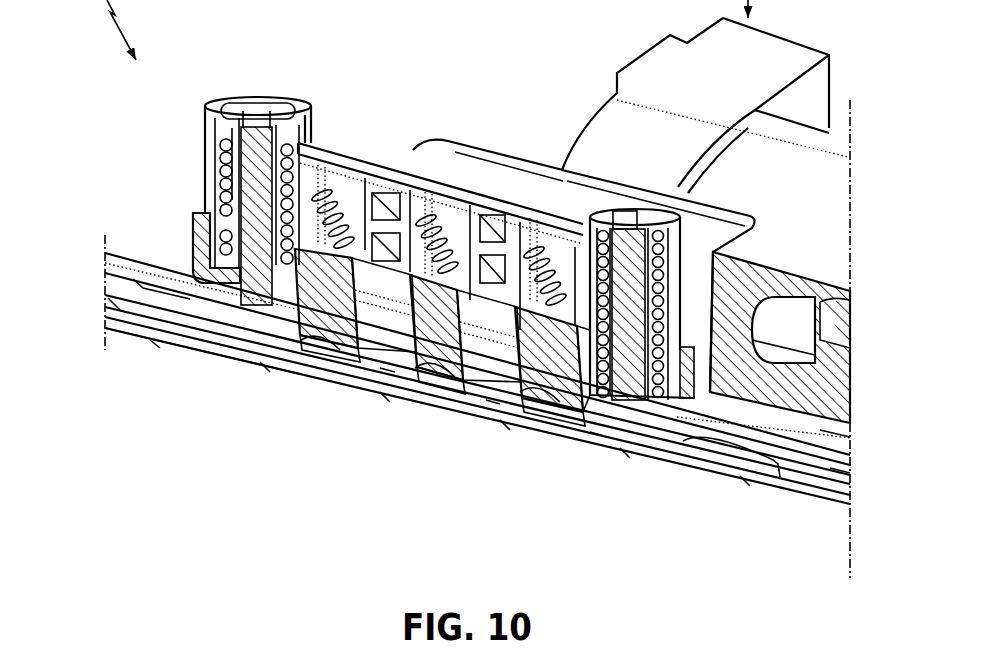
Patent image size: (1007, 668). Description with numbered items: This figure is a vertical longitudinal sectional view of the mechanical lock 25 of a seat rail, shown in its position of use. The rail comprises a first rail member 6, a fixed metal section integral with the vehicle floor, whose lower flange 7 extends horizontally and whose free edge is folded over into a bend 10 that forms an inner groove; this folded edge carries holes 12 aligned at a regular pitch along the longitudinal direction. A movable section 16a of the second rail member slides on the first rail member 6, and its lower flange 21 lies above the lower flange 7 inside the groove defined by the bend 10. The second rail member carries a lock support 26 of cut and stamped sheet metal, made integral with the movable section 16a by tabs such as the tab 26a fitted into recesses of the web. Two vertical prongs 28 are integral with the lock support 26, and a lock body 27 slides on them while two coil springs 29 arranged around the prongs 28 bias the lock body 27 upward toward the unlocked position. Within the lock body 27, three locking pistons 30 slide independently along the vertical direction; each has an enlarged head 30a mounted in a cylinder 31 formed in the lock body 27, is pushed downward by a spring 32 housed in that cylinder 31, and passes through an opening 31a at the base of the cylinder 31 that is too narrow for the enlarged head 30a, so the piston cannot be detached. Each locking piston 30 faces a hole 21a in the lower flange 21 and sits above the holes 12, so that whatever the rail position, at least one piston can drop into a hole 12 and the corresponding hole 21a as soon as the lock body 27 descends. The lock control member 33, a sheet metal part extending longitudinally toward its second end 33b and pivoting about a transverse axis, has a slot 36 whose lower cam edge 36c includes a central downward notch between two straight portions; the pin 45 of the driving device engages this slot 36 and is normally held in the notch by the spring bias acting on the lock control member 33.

The first rail member 6 is at (103, 328).
The lower flange 7 is at (689, 487).
The bend 10 is at (683, 432).
The holes 12 is at (620, 420).
The movable section 16a is at (104, 296).
The lower flange 21 is at (704, 474).
The hole 21a is at (305, 365).
The mechanical lock 25 is at (264, 88).
The lock support 26 is at (182, 214).
The tab 26a is at (337, 362).
The lock body 27 is at (300, 122).
The prongs 28 is at (257, 292).
The coil springs 29 is at (221, 247).
The locking pistons 30 is at (318, 300).
The enlarged head 30a is at (300, 318).
The cylinder 31 is at (322, 175).
The opening 31a is at (385, 372).
The spring 32 is at (436, 216).
The lock control member 33 is at (765, 280).
The second end 33b is at (447, 150).
The slot 36 is at (831, 306).
The cam edge 36c is at (796, 350).
The pin 45 is at (828, 470).